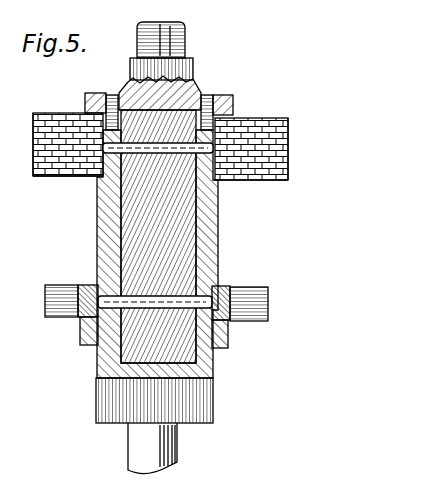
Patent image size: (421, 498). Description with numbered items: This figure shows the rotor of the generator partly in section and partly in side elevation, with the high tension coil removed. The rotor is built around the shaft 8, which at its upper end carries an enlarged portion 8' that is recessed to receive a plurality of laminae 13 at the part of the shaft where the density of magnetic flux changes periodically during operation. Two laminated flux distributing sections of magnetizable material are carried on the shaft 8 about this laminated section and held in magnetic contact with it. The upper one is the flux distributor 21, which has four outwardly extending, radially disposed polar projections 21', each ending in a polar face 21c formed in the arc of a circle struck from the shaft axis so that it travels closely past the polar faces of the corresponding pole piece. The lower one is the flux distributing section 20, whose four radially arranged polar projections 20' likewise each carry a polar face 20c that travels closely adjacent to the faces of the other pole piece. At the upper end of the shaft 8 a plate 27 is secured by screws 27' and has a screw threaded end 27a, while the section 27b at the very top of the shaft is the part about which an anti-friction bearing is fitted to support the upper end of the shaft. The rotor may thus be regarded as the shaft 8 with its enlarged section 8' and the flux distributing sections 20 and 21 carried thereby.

The screw threaded end 27a is at (186, 50).
The section at upper end of shaft 27b is at (194, 67).
The plate 27 is at (167, 95).
The screws 27' is at (157, 99).
The flux distributor 21 is at (160, 139).
The polar projections 21' is at (160, 150).
The outer periphery of adjusting ring 21c is at (162, 146).
The laminae 13 is at (220, 236).
The enlarged portion of shaft 8' is at (154, 266).
The flux distributing section 20 is at (156, 225).
The polar projections 20' is at (161, 306).
The knurled pin knobs 20c is at (44, 302).
The shaft 8 is at (169, 448).